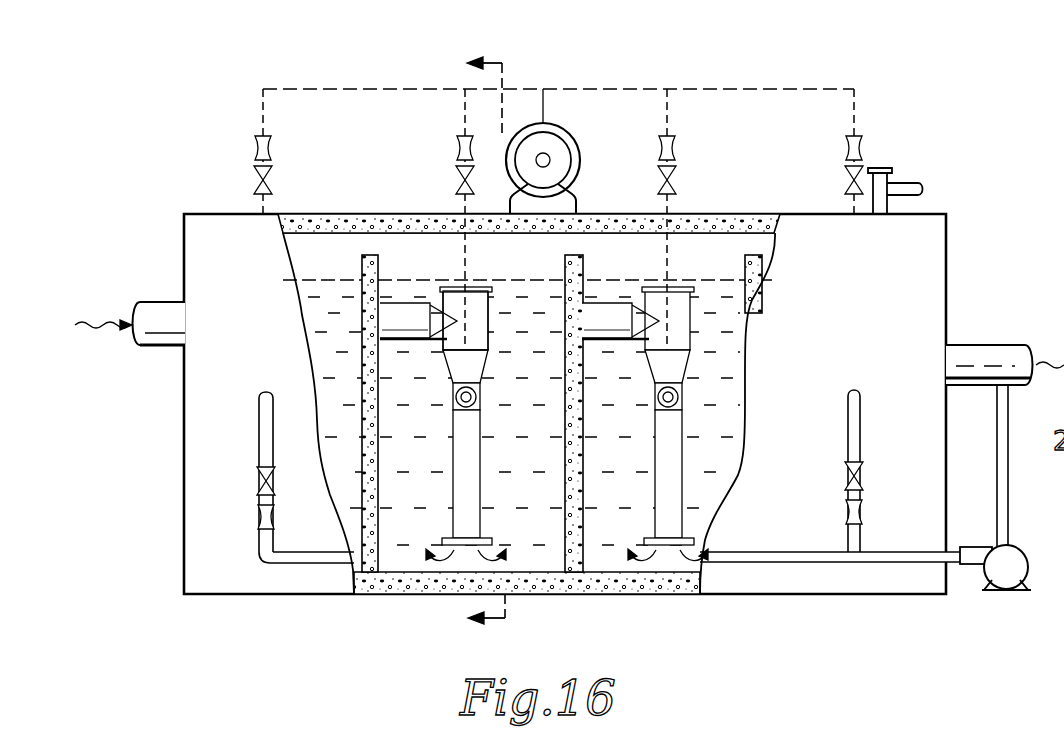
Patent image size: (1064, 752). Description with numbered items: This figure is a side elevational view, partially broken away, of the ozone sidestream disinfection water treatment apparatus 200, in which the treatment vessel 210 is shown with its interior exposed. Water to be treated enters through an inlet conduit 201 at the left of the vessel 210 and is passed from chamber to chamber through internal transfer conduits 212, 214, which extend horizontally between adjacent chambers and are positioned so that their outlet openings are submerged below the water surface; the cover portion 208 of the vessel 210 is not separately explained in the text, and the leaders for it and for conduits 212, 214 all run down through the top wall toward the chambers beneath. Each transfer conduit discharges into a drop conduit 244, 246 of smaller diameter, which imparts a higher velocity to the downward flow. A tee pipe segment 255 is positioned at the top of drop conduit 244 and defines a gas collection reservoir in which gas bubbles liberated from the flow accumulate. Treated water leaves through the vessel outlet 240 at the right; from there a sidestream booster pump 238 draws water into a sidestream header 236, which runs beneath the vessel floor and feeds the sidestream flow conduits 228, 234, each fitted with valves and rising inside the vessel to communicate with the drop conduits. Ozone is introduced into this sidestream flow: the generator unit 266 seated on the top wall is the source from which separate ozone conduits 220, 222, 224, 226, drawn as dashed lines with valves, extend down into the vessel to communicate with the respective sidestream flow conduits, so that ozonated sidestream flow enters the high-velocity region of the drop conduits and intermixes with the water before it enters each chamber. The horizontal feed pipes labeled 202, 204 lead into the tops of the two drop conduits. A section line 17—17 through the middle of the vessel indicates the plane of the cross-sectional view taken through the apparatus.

The wastewater treatment apparatus 200 is at (544, 430).
The inlet pipe 201 is at (157, 310).
The first pump assembly 202 is at (473, 399).
The second pump assembly 204 is at (658, 399).
The cover slab 208 is at (303, 245).
The vessel 210 is at (395, 247).
The internal transfer conduit 212 is at (707, 242).
The internal transfer conduit 214 is at (786, 246).
The section line 17- 17 is at (504, 345).
The control line 220 is at (258, 100).
The ozone conduit 222 is at (463, 110).
The ozone conduit 224 is at (670, 110).
The ozone conduit 226 is at (856, 106).
The sidestream flow conduit 228 is at (258, 440).
The sidestream flow conduit 234 is at (862, 437).
The sidestream header 236 is at (880, 563).
The sidestream booster pump 238 is at (995, 573).
The vessel outlet 240 is at (1001, 333).
The drop conduit 244 is at (478, 460).
The drop conduit 246 is at (667, 460).
The tee pipe segment 255 is at (487, 326).
The motor 266 is at (569, 134).